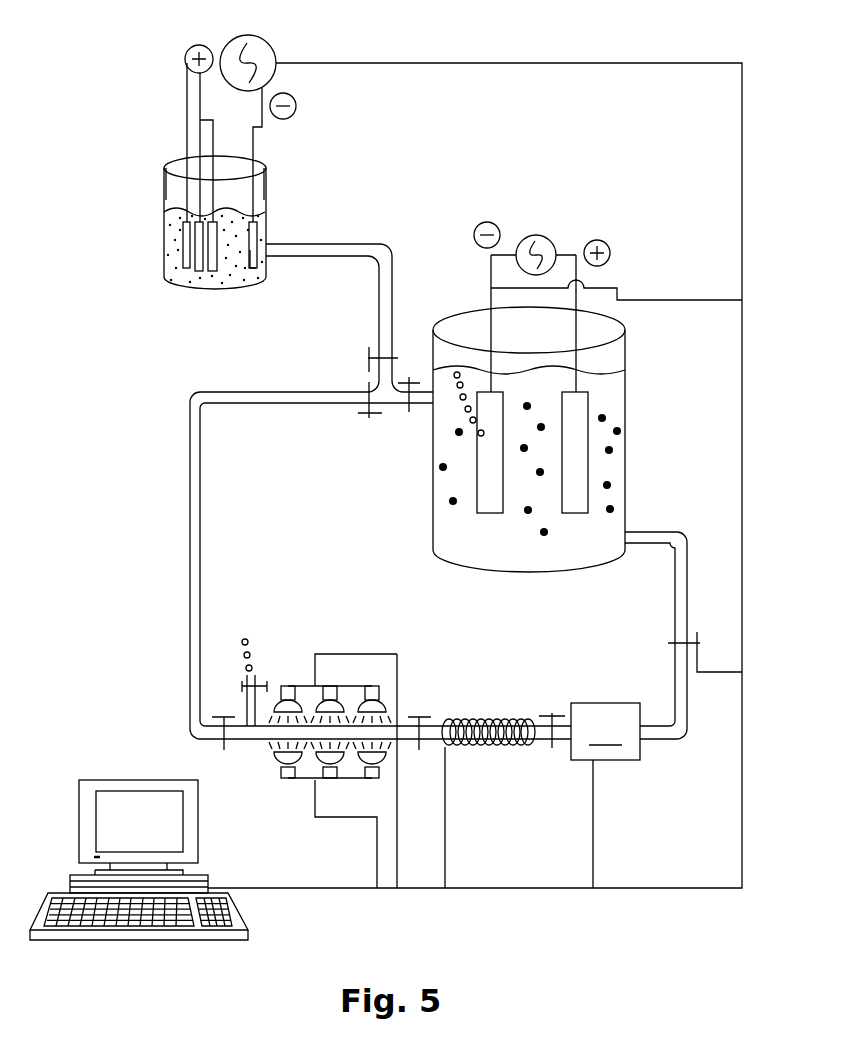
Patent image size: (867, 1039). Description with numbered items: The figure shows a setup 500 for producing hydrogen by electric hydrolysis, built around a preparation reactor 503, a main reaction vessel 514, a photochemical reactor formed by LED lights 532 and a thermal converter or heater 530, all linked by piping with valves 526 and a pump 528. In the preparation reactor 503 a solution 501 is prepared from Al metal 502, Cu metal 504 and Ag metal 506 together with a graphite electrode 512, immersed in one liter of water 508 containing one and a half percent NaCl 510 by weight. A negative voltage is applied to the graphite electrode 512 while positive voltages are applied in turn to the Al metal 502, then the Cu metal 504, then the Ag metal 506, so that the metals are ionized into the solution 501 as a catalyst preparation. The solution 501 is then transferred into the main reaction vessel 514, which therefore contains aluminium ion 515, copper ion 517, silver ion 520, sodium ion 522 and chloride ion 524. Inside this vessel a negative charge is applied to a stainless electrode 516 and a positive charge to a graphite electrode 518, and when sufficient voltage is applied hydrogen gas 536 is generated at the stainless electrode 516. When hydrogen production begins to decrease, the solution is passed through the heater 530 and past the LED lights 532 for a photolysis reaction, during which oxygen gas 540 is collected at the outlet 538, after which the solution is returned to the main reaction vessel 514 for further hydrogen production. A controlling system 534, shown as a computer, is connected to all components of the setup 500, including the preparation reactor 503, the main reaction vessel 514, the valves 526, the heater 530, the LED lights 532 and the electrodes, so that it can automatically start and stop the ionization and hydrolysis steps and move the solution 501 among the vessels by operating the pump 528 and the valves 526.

The setup 500 is at (88, 67).
The solution 501 is at (268, 208).
The Al metal 502 is at (185, 266).
The preparation reactor 503 is at (166, 183).
The Cu metal 504 is at (200, 270).
The Ag metal 506 is at (213, 270).
The water 508 is at (160, 212).
The NaCl 510 is at (260, 232).
The graphite electrode 512 is at (258, 266).
The main reaction vessel 514 is at (540, 573).
The aluminium ion 515 is at (606, 415).
The stainless electrode 516 is at (489, 500).
The copper ion 517 is at (621, 429).
The graphite electrode 518 is at (570, 500).
The silver ion 520 is at (613, 448).
The sodium ion 522 is at (611, 484).
The chloride ion 524 is at (614, 508).
The valves 526 is at (367, 354).
The pump 528 is at (605, 731).
The heater 530 is at (467, 722).
The LED lights 532 is at (347, 667).
The controlling system 534 is at (118, 780).
The hydrogen gas 536 is at (447, 409).
The outlet 538 is at (258, 658).
The oxygen gas 540 is at (247, 618).